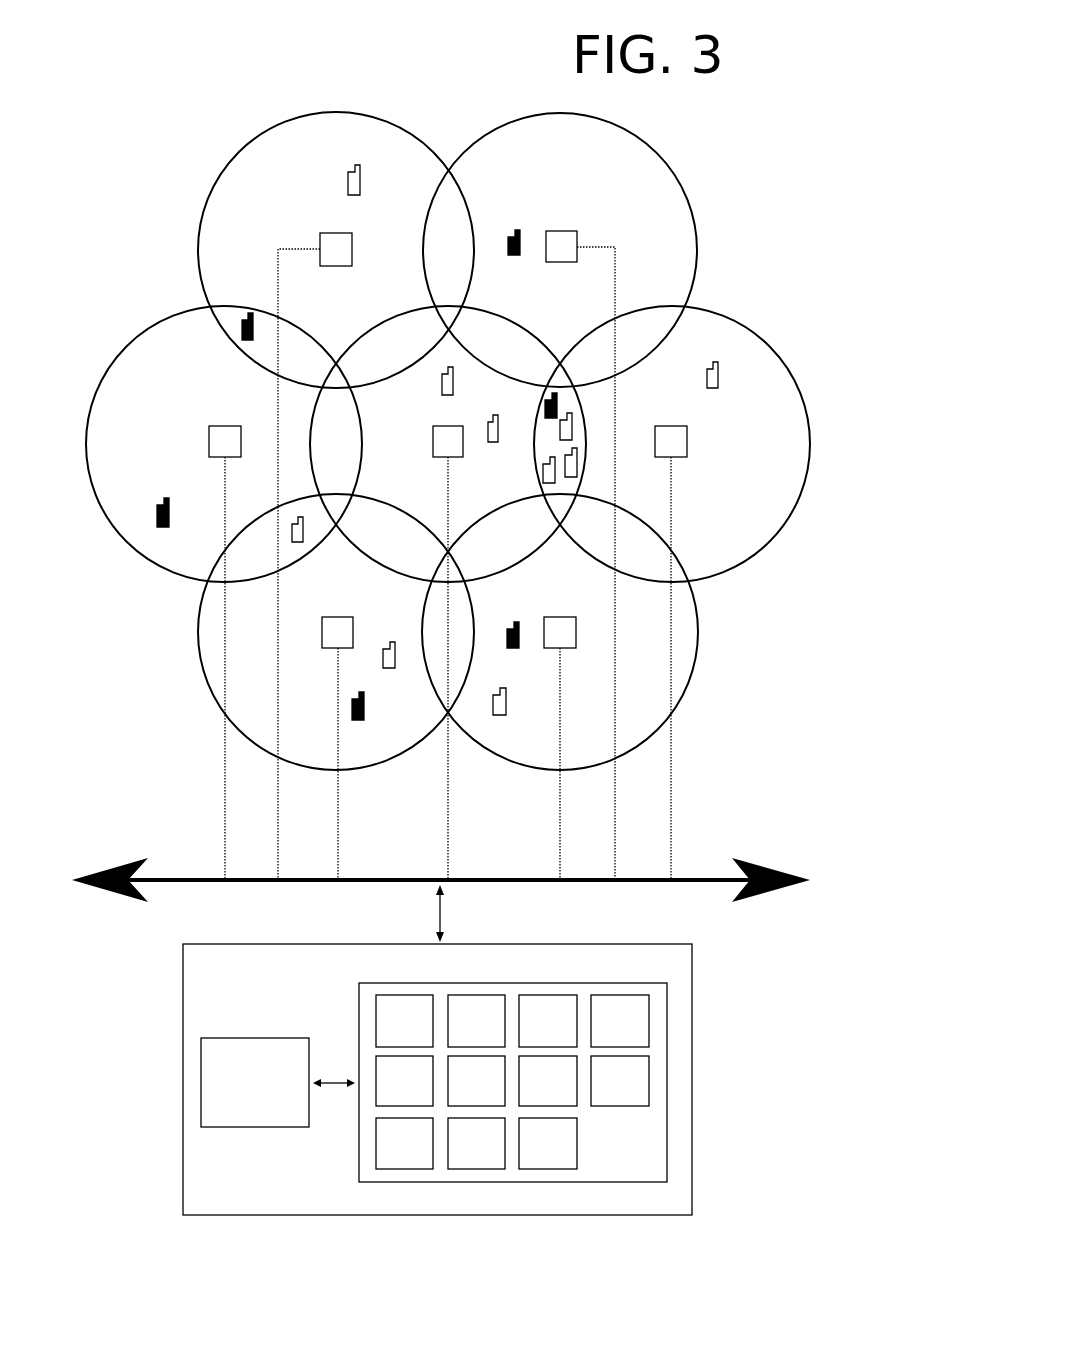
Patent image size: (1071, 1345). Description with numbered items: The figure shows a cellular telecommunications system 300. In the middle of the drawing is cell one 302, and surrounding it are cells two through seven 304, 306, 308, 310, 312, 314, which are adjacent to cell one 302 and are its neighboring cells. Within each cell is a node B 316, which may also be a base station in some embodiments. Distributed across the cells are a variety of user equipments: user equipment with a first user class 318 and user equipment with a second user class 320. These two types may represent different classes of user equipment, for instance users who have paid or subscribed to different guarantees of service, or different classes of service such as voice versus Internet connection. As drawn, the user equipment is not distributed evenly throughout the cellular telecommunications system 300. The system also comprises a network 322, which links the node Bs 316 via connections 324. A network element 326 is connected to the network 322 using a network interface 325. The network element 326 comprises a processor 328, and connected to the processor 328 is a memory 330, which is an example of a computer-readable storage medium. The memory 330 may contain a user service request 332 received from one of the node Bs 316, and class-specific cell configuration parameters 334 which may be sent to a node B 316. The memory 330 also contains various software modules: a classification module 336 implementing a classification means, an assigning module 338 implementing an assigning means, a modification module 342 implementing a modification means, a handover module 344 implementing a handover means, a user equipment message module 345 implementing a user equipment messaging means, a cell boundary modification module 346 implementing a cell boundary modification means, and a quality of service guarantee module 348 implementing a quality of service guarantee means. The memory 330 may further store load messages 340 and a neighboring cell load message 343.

The cellular telecommunications system 300 is at (208, 93).
The cell one 302 is at (310, 453).
The cell two 304 is at (778, 352).
The cell three 306 is at (698, 628).
The cell four 308 is at (212, 691).
The cell five 310 is at (122, 349).
The cell six 312 is at (217, 182).
The cell seven 314 is at (678, 176).
The node B 316 is at (320, 244).
The user equipment with a first user class 318 is at (242, 322).
The user equipment with a second user class 320 is at (348, 180).
The network 322 is at (698, 883).
The connections 324 is at (225, 822).
The network interface 325 is at (453, 918).
The network element 326 is at (183, 1002).
The processor 328 is at (201, 1083).
The memory 330 is at (692, 1062).
The user service request 332 is at (404, 1021).
The class-specific cell configuration parameters 334 is at (476, 1021).
The classification module 336 is at (548, 1021).
The assigning module 338 is at (620, 1021).
The load messages 340 is at (404, 1081).
The modification module 342 is at (476, 1081).
The neighboring cell load message 343 is at (548, 1081).
The handover module 344 is at (620, 1081).
The user equipment message module 345 is at (404, 1143).
The cell boundary modification module 346 is at (476, 1143).
The quality of service guarantee module 348 is at (548, 1143).